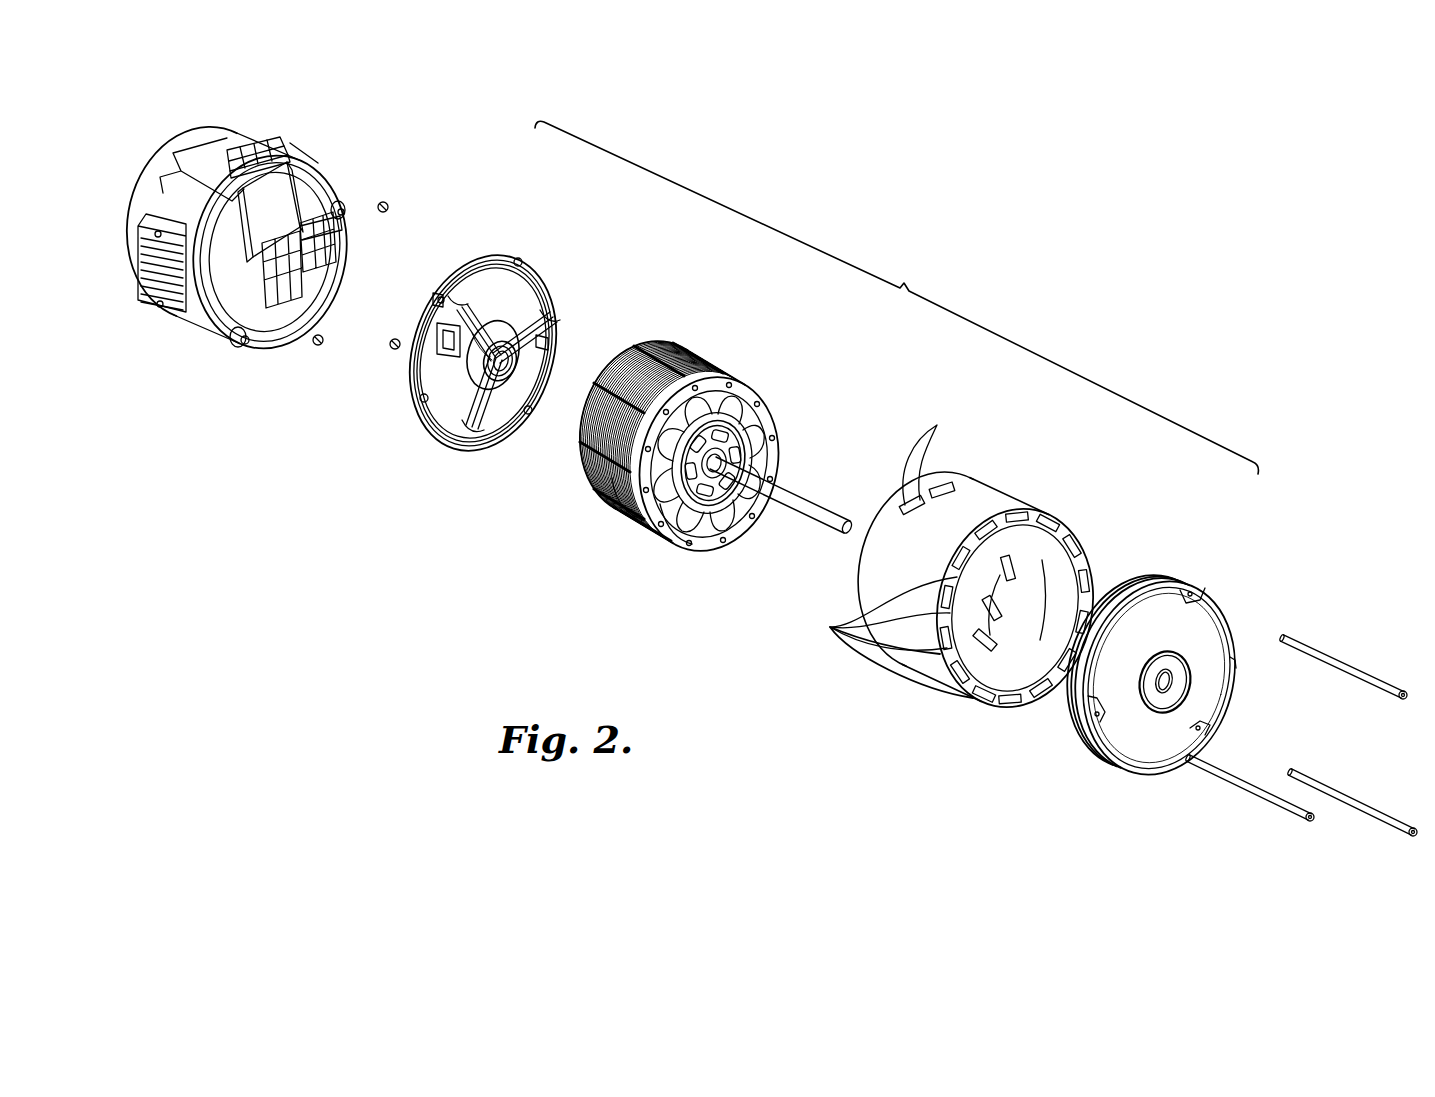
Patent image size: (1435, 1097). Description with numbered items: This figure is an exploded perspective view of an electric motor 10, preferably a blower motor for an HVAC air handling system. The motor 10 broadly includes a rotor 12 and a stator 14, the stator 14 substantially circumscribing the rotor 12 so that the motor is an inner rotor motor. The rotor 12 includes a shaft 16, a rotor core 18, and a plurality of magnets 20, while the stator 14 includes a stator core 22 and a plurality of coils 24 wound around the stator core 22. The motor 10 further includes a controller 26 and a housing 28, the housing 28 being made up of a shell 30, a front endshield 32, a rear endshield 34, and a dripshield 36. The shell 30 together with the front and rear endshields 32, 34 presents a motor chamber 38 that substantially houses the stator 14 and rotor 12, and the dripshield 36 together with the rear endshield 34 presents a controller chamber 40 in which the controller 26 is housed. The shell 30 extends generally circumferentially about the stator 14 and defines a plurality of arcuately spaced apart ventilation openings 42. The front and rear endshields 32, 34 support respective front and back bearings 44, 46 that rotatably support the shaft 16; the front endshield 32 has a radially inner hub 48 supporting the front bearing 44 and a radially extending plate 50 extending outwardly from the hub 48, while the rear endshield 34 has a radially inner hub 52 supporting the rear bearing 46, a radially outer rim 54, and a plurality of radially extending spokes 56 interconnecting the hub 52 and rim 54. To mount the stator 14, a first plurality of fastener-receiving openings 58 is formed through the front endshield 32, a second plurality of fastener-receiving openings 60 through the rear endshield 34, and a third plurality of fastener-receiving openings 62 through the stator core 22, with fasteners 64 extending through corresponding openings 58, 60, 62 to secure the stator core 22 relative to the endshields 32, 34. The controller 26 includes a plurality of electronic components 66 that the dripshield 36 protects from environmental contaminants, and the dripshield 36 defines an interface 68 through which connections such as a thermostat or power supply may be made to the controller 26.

The electric motor 10 is at (953, 243).
The rotor 12 is at (763, 451).
The stator 14 is at (701, 452).
The shaft 16 is at (815, 512).
The rotor core 18 is at (758, 467).
The magnets 20 is at (743, 398).
The stator core 22 is at (628, 512).
The coils 24 is at (660, 537).
The controller 26 is at (285, 204).
The housing 28 is at (968, 567).
The shell 30 is at (990, 500).
The front endshield 32 is at (1174, 674).
The rear endshield 34 is at (479, 349).
The dripshield 36 is at (263, 265).
The motor chamber 38 is at (1052, 568).
The controller chamber 40 is at (262, 326).
The ventilation openings 42 is at (826, 625).
The front bearing 44 is at (1158, 703).
The back bearing 46 is at (480, 362).
The hub 48 is at (1186, 652).
The plate 50 is at (1203, 678).
The hub 52 is at (505, 325).
The rim 54 is at (551, 330).
The spokes 56 is at (476, 290).
The fastener-receiving openings 58 is at (1191, 590).
The fastener-receiving openings 60 is at (517, 259).
The fastener-receiving openings 62 is at (731, 372).
The fasteners 64 is at (1375, 685).
The electronic components 66 is at (250, 205).
The interface 68 is at (265, 150).